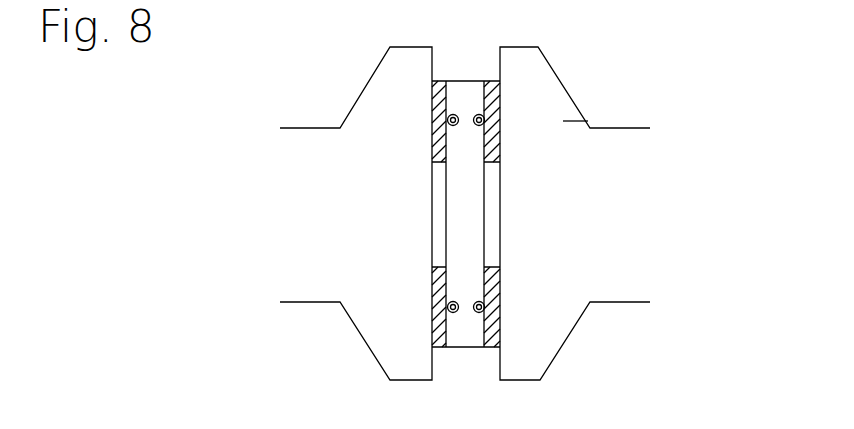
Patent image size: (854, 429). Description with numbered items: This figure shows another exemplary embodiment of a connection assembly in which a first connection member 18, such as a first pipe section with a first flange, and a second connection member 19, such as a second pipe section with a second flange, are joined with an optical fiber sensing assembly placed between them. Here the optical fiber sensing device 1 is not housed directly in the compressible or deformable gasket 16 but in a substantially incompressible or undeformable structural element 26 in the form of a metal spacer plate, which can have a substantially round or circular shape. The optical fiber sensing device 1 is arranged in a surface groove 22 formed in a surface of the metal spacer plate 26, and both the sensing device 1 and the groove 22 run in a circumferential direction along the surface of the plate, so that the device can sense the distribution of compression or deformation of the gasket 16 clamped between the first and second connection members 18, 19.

The optical fiber sensing device 1 is at (447, 307).
The gasket 16 is at (492, 118).
The first connection member 18 is at (412, 97).
The second connection member 19 is at (586, 121).
The surface groove 22 is at (457, 312).
The structural element 26 is at (465, 81).